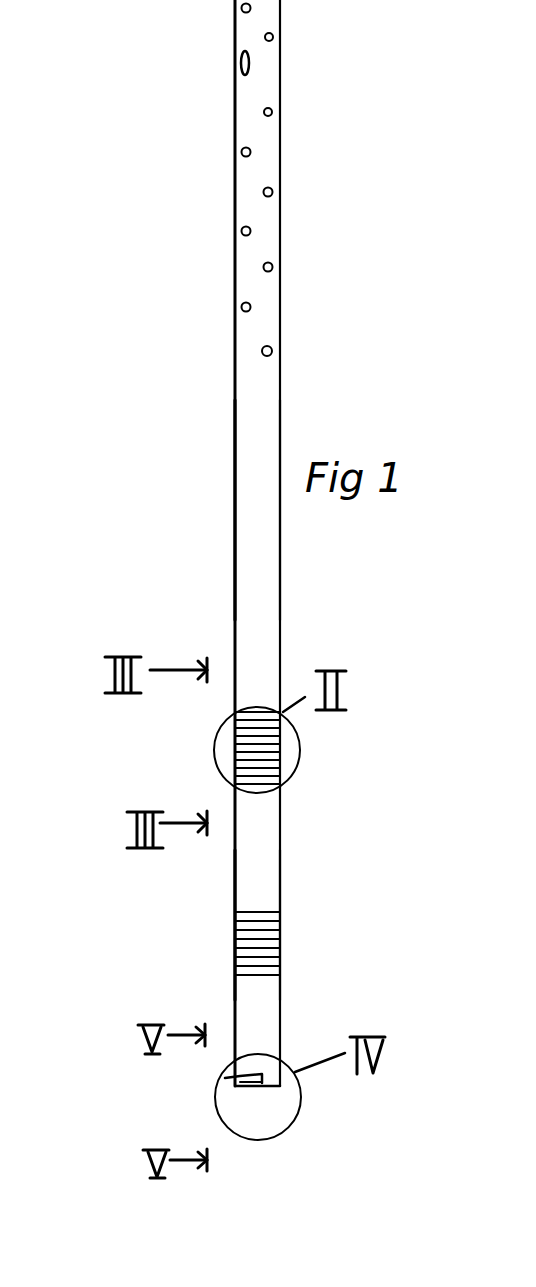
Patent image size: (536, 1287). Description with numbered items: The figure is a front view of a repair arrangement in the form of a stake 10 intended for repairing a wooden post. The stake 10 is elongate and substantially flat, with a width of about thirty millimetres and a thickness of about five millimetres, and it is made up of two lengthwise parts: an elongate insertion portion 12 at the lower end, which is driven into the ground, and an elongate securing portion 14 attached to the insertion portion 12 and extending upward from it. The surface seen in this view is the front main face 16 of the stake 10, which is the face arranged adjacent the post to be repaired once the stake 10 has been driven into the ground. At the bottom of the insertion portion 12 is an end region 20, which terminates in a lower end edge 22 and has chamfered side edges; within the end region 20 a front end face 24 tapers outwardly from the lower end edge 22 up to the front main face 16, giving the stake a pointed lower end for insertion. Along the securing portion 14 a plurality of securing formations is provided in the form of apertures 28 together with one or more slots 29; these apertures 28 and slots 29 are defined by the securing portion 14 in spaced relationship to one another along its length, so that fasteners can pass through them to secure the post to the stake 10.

The stake 10 is at (212, 298).
The insertion portion 12 is at (283, 868).
The securing portion 14 is at (283, 247).
The front main face 16 is at (250, 498).
The end region 20 is at (272, 1095).
The end edge 22 is at (252, 1096).
The front end face 24 is at (225, 1078).
The apertures 28 is at (270, 192).
The slots 29 is at (240, 50).